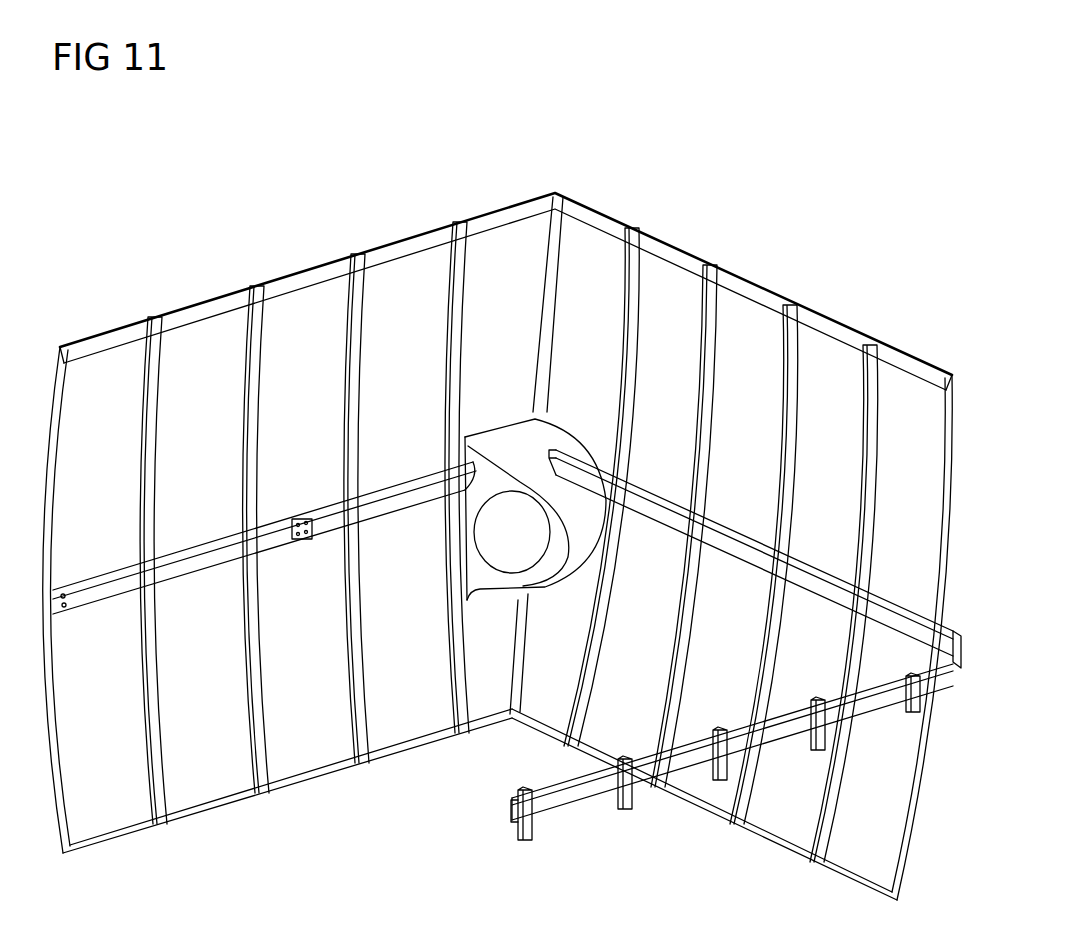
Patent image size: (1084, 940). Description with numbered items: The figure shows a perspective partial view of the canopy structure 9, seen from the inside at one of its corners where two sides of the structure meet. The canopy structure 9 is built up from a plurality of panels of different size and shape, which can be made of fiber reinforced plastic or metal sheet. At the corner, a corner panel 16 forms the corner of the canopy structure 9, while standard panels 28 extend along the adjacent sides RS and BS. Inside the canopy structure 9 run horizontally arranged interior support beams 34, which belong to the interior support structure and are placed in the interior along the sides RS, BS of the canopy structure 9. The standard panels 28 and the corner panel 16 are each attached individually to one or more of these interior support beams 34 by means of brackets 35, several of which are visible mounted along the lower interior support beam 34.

The canopy structure 9 is at (362, 133).
The corner panel 16 is at (527, 223).
The standard panel 28 is at (112, 820).
The interior support beam 34 is at (187, 588).
The bracket 35 is at (531, 840).
The side RS is at (214, 228).
The side BS is at (784, 235).